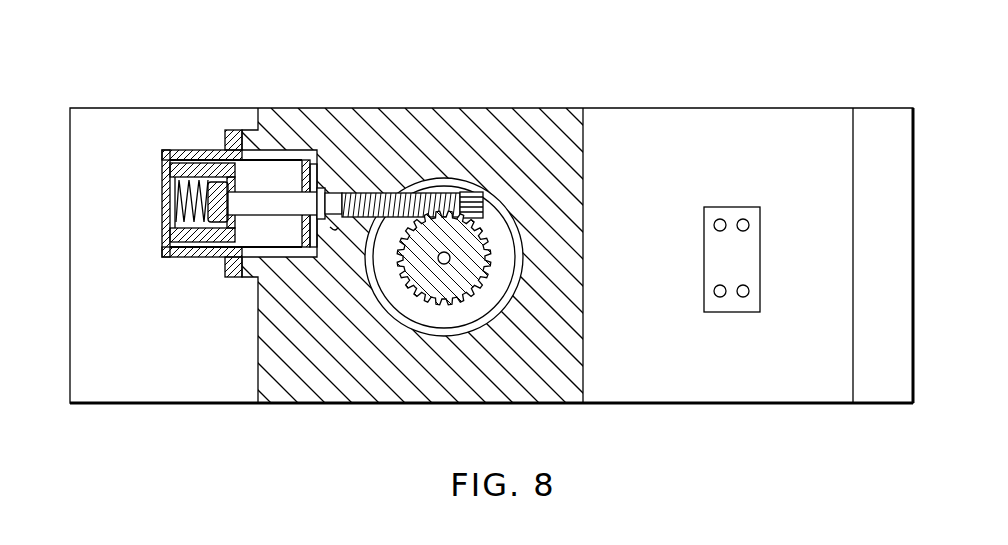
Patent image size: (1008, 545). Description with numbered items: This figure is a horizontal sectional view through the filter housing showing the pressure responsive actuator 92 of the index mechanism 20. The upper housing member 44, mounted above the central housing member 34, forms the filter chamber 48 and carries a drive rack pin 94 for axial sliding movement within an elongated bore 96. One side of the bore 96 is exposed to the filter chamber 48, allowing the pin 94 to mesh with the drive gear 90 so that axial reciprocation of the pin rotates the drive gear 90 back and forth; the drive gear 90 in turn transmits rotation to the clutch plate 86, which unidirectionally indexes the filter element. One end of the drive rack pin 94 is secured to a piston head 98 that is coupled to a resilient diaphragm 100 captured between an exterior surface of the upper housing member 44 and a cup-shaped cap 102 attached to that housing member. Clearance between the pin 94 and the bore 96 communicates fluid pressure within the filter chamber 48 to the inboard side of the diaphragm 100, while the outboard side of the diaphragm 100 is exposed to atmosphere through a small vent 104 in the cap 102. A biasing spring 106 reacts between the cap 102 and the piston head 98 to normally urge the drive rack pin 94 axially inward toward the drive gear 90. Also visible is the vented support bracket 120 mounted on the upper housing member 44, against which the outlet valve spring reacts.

The index mechanism 20 is at (456, 174).
The central housing member 34 is at (147, 388).
The upper housing member 44 is at (305, 392).
The filter chamber 48 is at (470, 328).
The clutch plate 86 is at (530, 315).
The drive gear 90 is at (433, 283).
The pressure responsive actuator 92 is at (207, 164).
The drive rack pin 94 is at (386, 192).
The elongated bore 96 is at (337, 228).
The piston head 98 is at (196, 243).
The resilient diaphragm 100 is at (237, 243).
The cup-shaped cap 102 is at (162, 155).
The vent 104 is at (158, 200).
The biasing spring 106 is at (180, 181).
The vented support bracket 120 is at (732, 212).